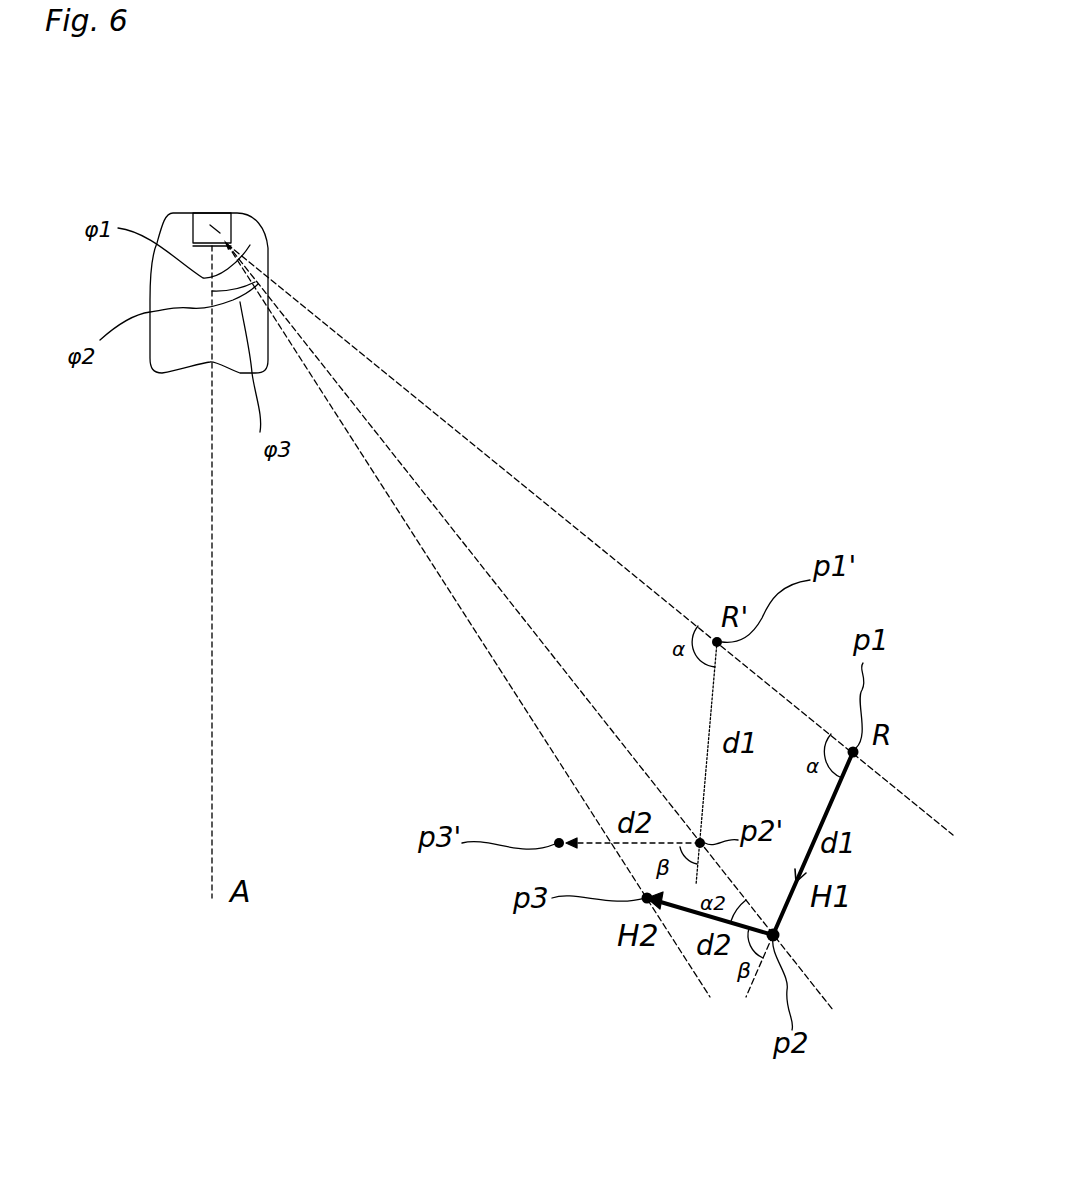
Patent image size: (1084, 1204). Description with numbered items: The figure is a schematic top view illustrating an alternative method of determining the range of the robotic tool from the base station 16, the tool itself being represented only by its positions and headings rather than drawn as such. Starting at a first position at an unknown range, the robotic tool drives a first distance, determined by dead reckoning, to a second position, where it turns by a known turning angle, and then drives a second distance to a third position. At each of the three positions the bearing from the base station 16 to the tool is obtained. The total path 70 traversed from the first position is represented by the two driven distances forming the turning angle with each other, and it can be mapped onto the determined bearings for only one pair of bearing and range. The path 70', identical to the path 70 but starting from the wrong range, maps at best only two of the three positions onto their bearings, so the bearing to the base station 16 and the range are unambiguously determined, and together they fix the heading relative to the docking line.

The base station 16 is at (168, 297).
The total path 70 is at (856, 843).
The path 70' is at (673, 763).